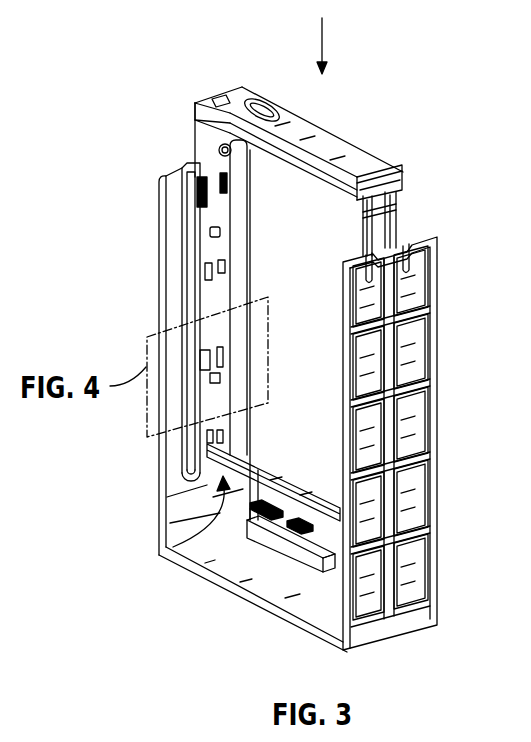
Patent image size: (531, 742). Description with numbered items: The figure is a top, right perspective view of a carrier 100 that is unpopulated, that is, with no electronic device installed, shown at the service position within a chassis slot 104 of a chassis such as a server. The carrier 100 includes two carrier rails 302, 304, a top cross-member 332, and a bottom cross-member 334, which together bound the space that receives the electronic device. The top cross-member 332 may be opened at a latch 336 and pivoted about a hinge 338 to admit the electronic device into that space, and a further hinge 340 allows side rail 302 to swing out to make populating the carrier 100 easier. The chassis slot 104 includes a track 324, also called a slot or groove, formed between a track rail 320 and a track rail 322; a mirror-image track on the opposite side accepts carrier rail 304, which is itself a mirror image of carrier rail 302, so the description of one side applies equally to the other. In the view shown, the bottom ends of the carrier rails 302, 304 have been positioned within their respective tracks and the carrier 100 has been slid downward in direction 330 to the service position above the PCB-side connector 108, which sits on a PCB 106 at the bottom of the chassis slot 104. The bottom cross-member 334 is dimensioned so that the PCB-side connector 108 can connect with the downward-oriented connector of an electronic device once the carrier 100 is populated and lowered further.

The carrier 100 is at (350, 158).
The chassis slot 104 is at (160, 477).
The PCB 106 is at (312, 588).
The PCB-side connector 108 is at (297, 555).
The carrier rail 302 is at (212, 135).
The carrier rail 304 is at (403, 200).
The track rail 320 is at (186, 248).
The track rail 322 is at (243, 200).
The track 324 is at (173, 548).
The direction 330 is at (326, 50).
The top cross-member 332 is at (292, 142).
The bottom cross-member 334 is at (255, 458).
The latch 336 is at (250, 100).
The hinge 338 is at (398, 178).
The hinge 340 is at (223, 432).